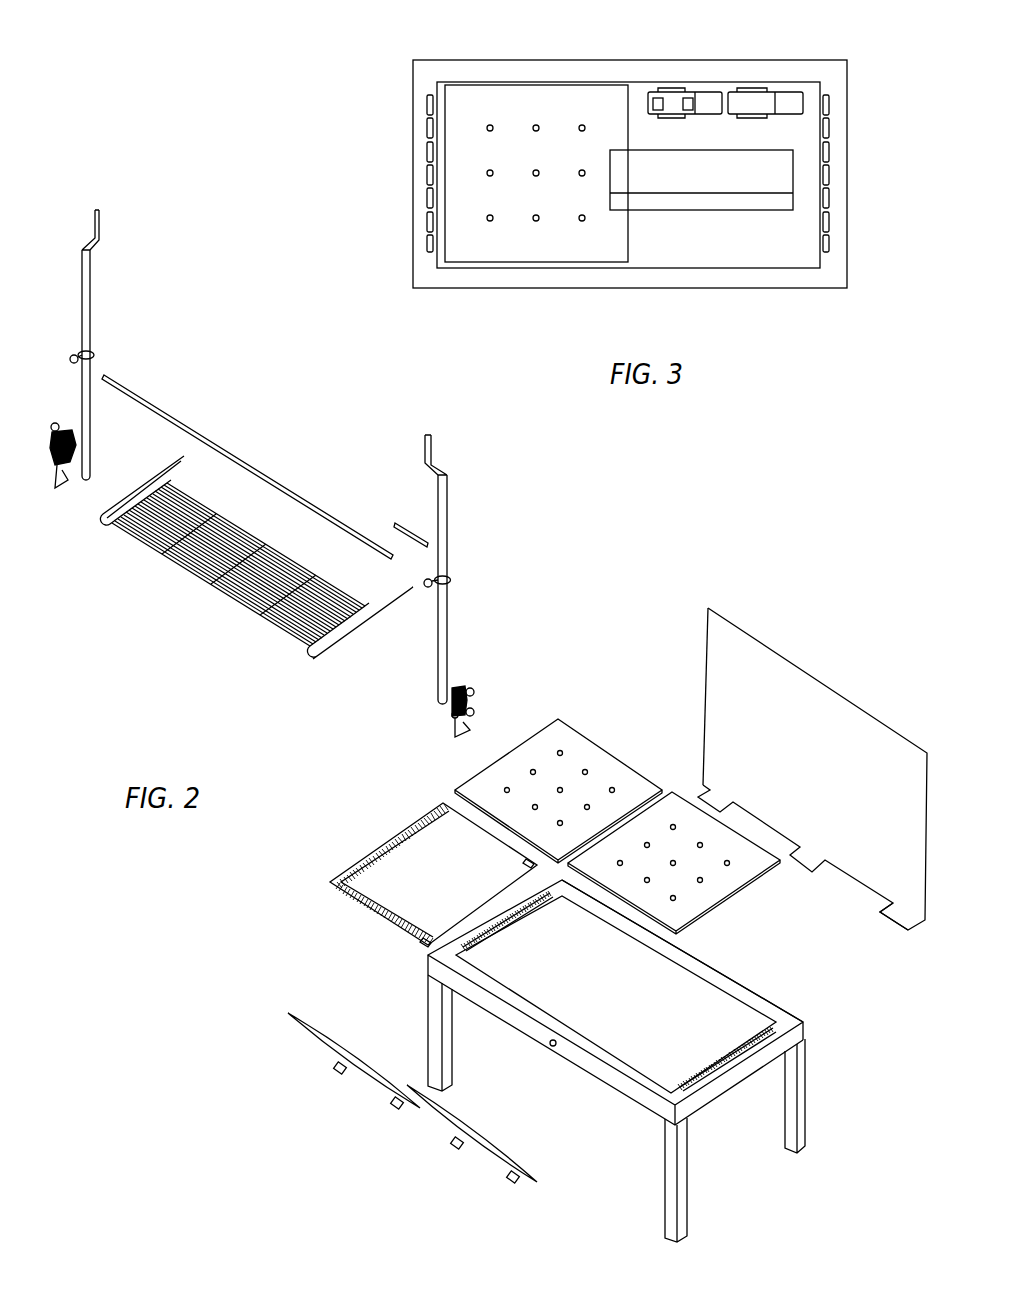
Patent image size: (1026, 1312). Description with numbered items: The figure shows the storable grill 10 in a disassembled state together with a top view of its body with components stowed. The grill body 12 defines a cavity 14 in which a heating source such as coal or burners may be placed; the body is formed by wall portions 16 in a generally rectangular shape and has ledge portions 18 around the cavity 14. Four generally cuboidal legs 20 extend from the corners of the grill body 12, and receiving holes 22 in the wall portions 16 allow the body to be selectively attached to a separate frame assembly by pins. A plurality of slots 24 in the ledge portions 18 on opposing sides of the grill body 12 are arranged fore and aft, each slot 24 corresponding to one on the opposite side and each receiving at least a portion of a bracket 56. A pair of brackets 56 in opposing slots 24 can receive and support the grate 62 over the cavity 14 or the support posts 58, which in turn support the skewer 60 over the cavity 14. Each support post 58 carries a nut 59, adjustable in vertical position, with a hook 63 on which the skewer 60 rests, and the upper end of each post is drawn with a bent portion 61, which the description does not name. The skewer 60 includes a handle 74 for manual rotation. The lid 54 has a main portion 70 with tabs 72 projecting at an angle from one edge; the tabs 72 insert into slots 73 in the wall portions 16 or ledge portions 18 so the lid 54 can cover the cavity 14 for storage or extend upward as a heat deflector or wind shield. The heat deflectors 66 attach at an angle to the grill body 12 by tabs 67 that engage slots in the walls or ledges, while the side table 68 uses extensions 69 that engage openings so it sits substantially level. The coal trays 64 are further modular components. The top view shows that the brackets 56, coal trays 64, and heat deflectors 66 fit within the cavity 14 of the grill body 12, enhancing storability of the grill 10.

In FIG. 2, the storable grill 10 is at (280, 360).
In FIG. 3, the grill body 12 is at (380, 49).
In FIG. 2, the grill body 12 is at (859, 1007).
In FIG. 3, the cavity 14 is at (810, 87).
In FIG. 2, the cavity 14 is at (697, 997).
In FIG. 2, the wall portions 16 is at (627, 1088).
In FIG. 3, the ledge portions 18 is at (432, 270).
In FIG. 2, the ledge portions 18 is at (430, 957).
In FIG. 2, the legs 20 is at (452, 1037).
In FIG. 2, the receiving holes 22 is at (553, 1046).
In FIG. 3, the slots 24 is at (425, 105).
In FIG. 2, the slots 24 is at (508, 918).
In FIG. 2, the lid 54 is at (783, 787).
In FIG. 3, the brackets 56 is at (673, 86).
In FIG. 2, the brackets 56 is at (55, 424).
In FIG. 2, the support posts 58 is at (92, 271).
In FIG. 2, the nut 59 is at (90, 353).
In FIG. 2, the skewer 60 is at (213, 448).
In FIG. 2, the hook 61 is at (100, 226).
In FIG. 2, the grate 62 is at (275, 680).
In FIG. 2, the hook 63 is at (75, 356).
In FIG. 3, the coal trays 64 is at (555, 262).
In FIG. 2, the coal trays 64 is at (575, 730).
In FIG. 3, the heat deflectors 66 is at (728, 210).
In FIG. 2, the heat deflectors 66 is at (423, 1111).
In FIG. 2, the tabs 67 is at (342, 1075).
In FIG. 2, the side table 68 is at (370, 888).
In FIG. 2, the extensions 69 is at (530, 864).
In FIG. 2, the main portion 70 is at (727, 688).
In FIG. 2, the tabs 72 is at (893, 923).
In FIG. 2, the slots 73 is at (782, 993).
In FIG. 2, the handle 74 is at (395, 523).